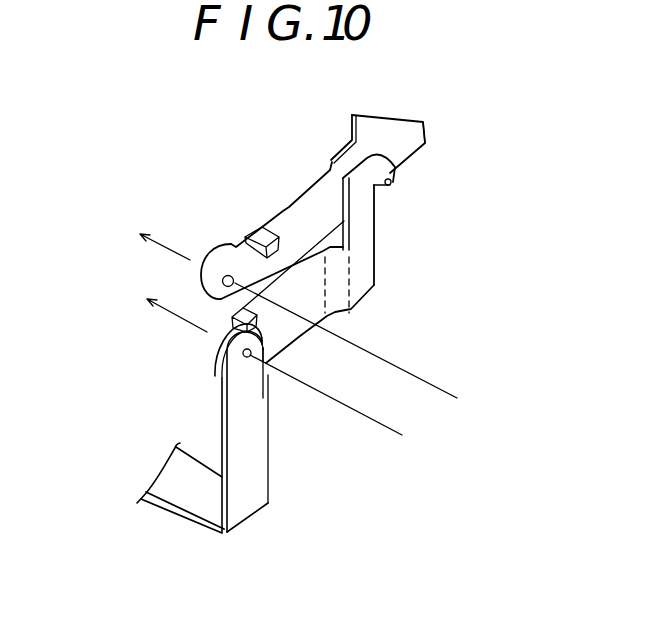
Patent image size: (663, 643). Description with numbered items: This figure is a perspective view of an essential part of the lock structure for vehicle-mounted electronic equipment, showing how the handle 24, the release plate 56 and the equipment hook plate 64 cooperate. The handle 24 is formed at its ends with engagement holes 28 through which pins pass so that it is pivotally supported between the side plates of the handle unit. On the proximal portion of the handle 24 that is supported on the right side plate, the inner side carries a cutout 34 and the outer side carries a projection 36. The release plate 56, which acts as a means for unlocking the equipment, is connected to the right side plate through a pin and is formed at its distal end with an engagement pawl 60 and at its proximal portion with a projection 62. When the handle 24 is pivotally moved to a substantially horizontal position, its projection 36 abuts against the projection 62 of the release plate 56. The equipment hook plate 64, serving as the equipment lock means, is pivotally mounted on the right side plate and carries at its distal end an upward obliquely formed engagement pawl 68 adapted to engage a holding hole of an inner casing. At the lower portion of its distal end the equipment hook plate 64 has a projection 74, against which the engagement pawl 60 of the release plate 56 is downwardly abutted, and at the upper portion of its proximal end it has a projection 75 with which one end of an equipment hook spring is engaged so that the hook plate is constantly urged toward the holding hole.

The handle 24 is at (247, 512).
The engagement hole 28 is at (270, 373).
The cutout 34 is at (270, 373).
The projection 36 is at (223, 377).
The release plate 56 is at (372, 283).
The engagement pawl 60 is at (380, 192).
The projection 62 is at (230, 313).
The equipment hook plate 64 is at (415, 135).
The engagement pawl 68 is at (373, 123).
The projection 74 is at (392, 184).
The projection 75 is at (260, 228).